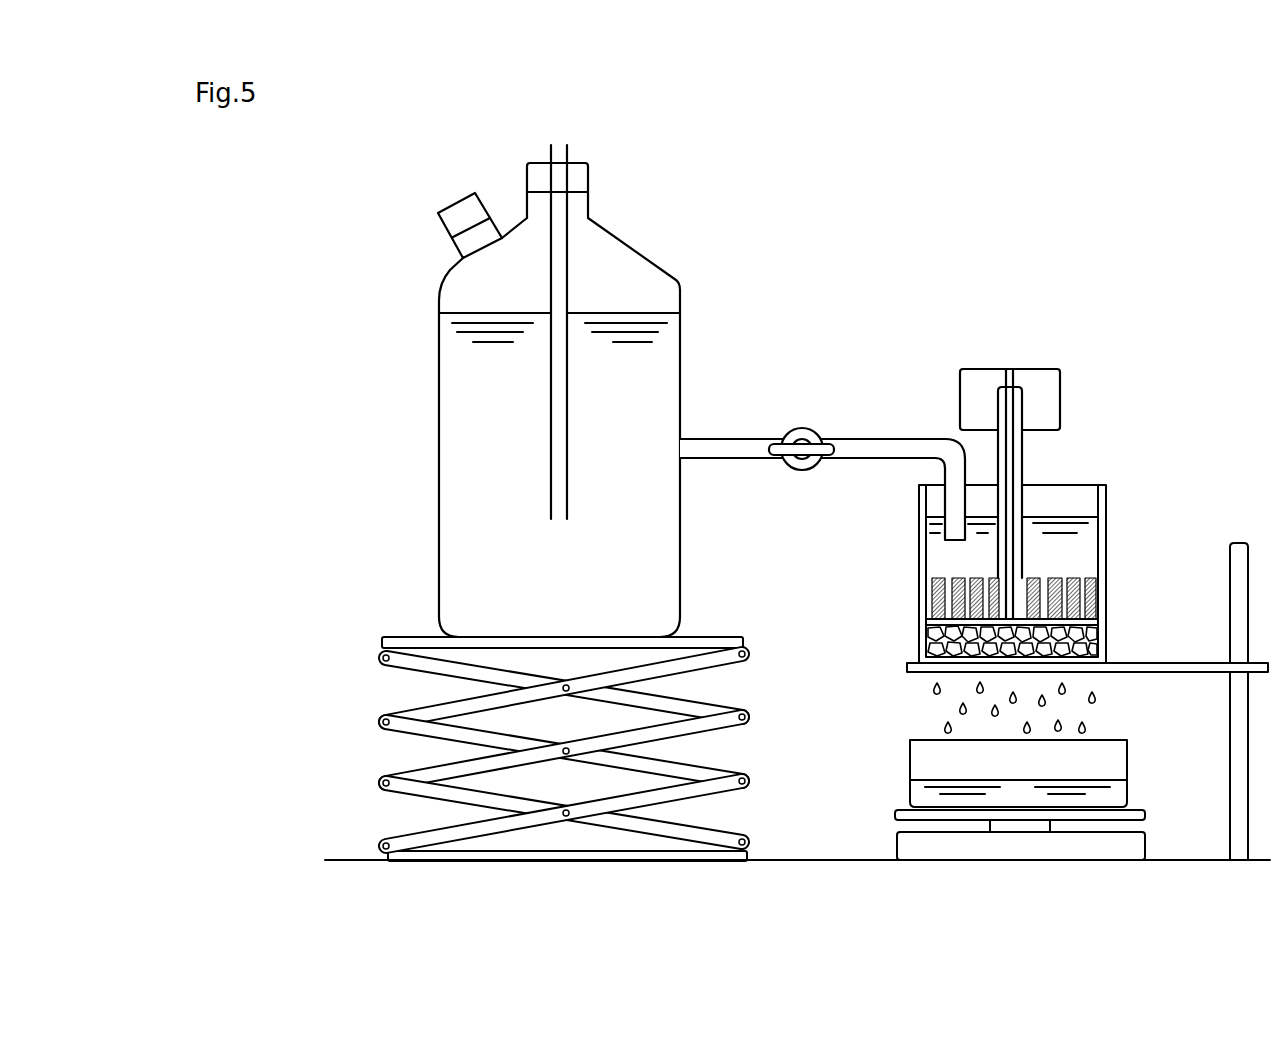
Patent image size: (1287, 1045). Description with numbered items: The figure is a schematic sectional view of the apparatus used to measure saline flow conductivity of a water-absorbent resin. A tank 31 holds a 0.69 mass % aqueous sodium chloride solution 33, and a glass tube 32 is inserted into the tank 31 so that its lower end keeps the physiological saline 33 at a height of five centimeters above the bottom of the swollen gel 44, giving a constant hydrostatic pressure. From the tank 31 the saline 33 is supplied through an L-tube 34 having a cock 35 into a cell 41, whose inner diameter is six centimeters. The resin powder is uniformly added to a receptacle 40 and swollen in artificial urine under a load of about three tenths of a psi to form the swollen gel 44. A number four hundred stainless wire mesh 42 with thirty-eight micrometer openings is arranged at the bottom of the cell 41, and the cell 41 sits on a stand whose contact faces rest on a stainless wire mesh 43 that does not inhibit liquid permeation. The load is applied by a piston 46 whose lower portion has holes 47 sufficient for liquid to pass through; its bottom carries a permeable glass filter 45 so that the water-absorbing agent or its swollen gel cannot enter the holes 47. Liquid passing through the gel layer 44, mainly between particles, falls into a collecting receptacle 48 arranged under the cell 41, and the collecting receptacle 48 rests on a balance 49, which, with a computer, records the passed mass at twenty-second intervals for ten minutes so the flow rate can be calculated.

The tank 31 is at (658, 258).
The glass tube 32 is at (548, 478).
The 0.69 mass % aqueous sodium chloride solution 33 is at (660, 370).
The L-tube having cock 34 is at (742, 438).
The cock 35 is at (813, 432).
The receptacle 40 is at (1040, 531).
The cell 41 is at (1058, 546).
The stainless wire mesh 42 is at (925, 647).
The stainless wire mesh 43 is at (1092, 675).
The swollen gel 44 is at (1090, 625).
The glass filter 45 is at (925, 615).
The piston 46 is at (1025, 455).
The holes in piston 47 is at (1092, 592).
The collecting receptacle 48 is at (1130, 758).
The balance 49 is at (1148, 845).